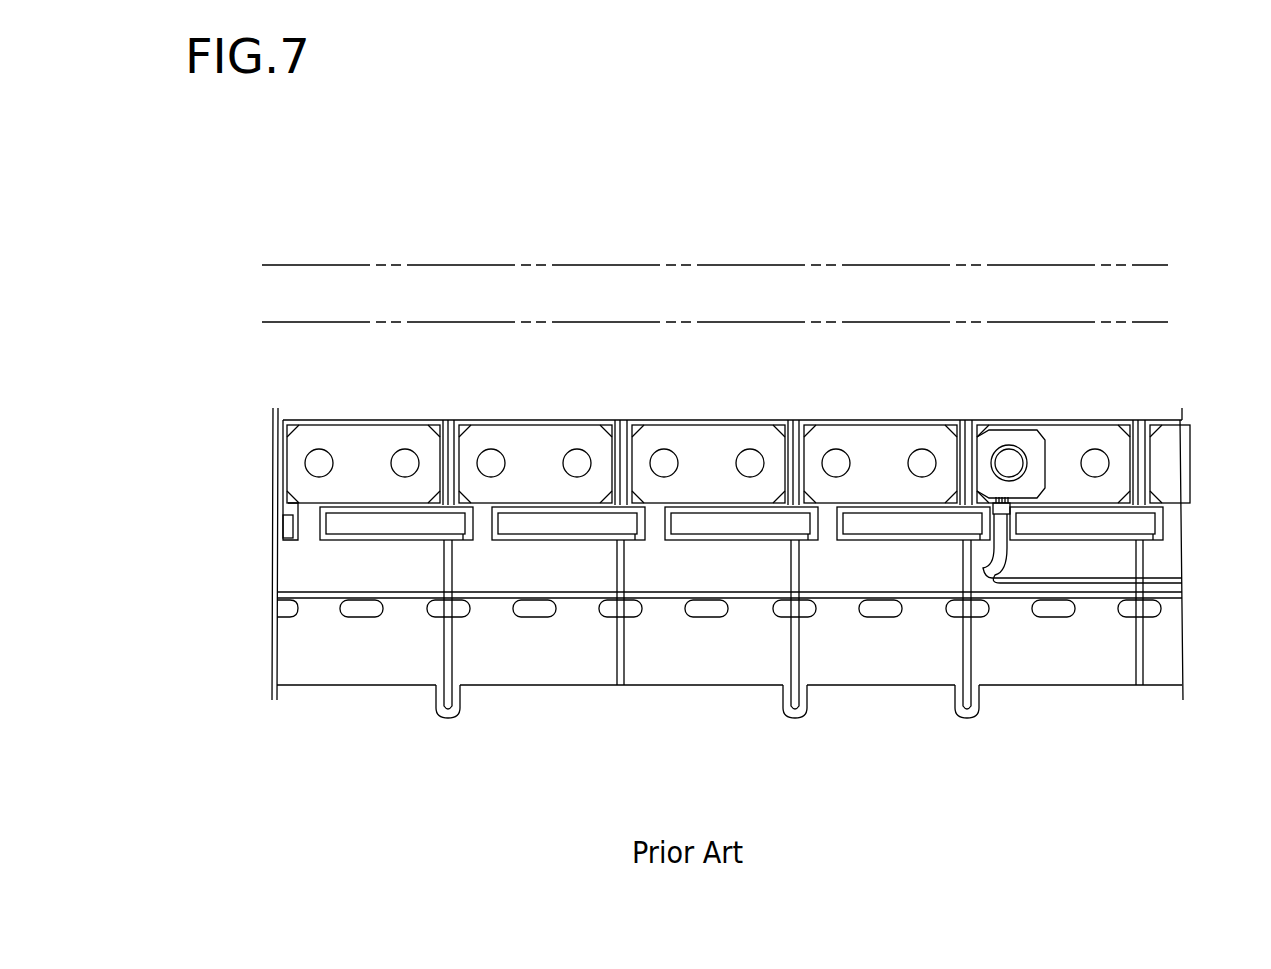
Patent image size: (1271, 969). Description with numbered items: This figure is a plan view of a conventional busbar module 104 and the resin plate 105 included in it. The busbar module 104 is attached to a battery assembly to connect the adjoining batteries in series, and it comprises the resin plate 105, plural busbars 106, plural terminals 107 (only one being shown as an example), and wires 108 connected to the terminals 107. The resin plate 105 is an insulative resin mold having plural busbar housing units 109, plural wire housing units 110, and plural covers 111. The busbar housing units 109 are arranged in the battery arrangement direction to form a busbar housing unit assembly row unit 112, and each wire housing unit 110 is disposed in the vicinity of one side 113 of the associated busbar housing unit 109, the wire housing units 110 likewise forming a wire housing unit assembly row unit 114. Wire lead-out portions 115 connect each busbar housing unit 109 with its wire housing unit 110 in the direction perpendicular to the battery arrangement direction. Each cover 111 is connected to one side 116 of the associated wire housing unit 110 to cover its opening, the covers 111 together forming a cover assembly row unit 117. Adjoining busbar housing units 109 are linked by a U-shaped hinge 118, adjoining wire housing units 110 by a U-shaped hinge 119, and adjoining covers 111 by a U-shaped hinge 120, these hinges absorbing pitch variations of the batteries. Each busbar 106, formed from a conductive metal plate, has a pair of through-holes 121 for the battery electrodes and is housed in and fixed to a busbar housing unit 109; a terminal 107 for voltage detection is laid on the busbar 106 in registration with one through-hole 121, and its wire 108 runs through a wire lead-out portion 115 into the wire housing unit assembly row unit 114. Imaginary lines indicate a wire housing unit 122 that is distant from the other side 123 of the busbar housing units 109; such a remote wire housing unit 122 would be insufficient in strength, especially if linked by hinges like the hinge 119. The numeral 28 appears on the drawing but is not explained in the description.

The busbar module 104 is at (1175, 351).
The resin plate 105 is at (923, 421).
The busbar 106 is at (368, 452).
The terminal 107 is at (1020, 442).
The wire 108 is at (1010, 572).
The busbar housing unit 109 is at (441, 425).
The wire housing unit 110 is at (398, 577).
The cover 111 is at (348, 672).
The busbar housing unit assembly row unit 112 is at (285, 470).
The one side of the busbar housing unit 113 is at (400, 517).
The wire housing unit assembly row unit 114 is at (287, 565).
The wire lead-out portion 115 is at (295, 525).
The one side of the wire housing unit 116 is at (315, 603).
The cover assembly row unit 117 is at (290, 638).
The U-shaped hinge 118 is at (452, 423).
The U-shaped hinge 119 is at (452, 547).
The U-shaped hinge 120 is at (795, 720).
The through-hole 121 is at (318, 450).
The wire housing unit 122 is at (733, 278).
The other side of the busbar housing units 123 is at (672, 422).
The pin 28 is at (449, 720).